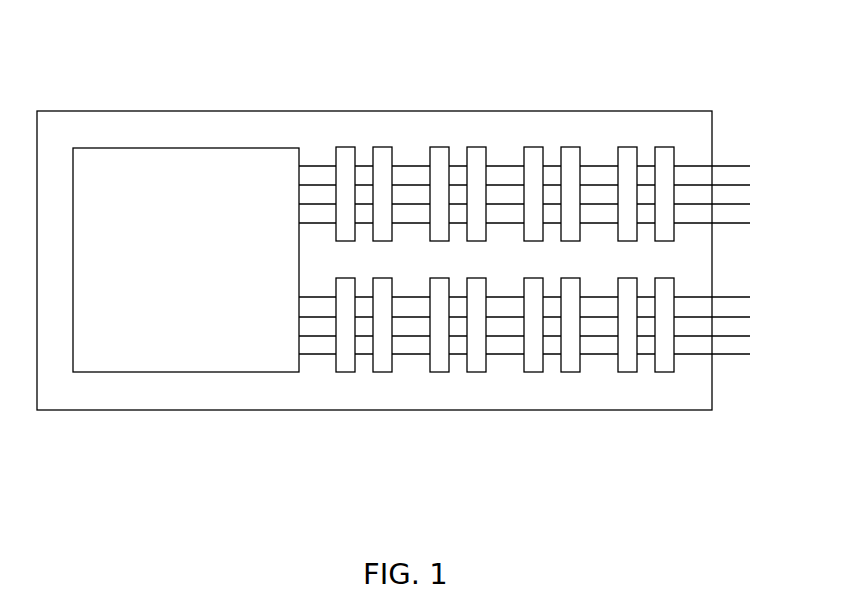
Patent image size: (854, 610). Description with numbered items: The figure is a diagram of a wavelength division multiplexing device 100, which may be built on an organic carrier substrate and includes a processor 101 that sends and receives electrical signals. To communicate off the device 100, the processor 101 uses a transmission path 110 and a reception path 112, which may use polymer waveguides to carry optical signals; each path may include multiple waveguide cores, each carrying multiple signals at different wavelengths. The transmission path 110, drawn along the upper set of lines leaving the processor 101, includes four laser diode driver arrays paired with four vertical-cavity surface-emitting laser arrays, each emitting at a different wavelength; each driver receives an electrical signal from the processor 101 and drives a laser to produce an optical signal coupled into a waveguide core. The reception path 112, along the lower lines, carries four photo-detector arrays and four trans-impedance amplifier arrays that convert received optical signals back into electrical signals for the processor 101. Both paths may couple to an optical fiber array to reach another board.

The WDM device 100 is at (73, 110).
The processor 101 is at (205, 286).
The transmission path 110 is at (738, 166).
The reception path 112 is at (740, 354).